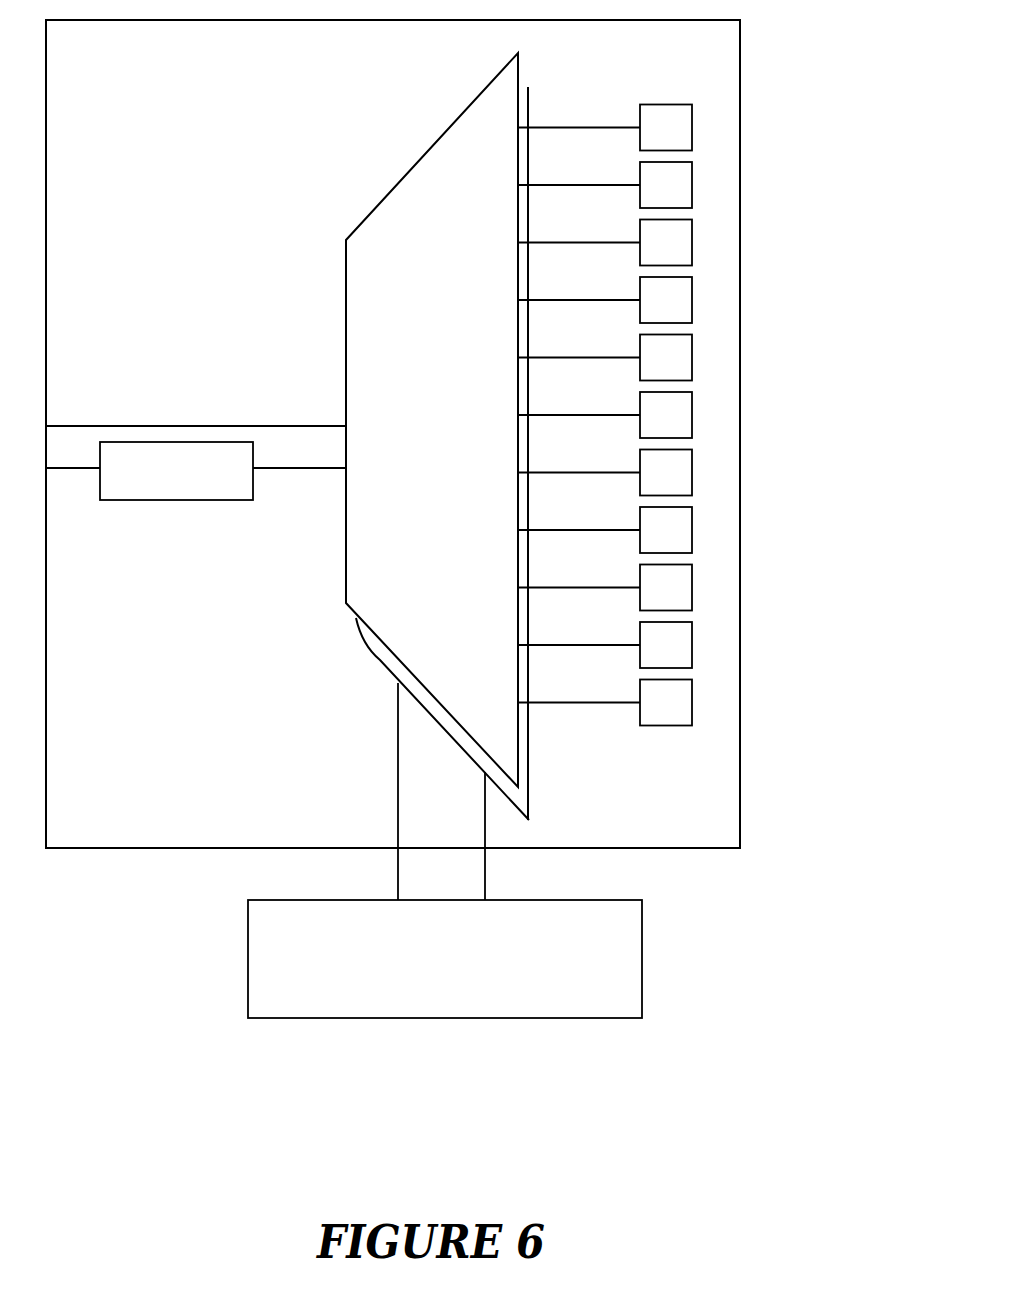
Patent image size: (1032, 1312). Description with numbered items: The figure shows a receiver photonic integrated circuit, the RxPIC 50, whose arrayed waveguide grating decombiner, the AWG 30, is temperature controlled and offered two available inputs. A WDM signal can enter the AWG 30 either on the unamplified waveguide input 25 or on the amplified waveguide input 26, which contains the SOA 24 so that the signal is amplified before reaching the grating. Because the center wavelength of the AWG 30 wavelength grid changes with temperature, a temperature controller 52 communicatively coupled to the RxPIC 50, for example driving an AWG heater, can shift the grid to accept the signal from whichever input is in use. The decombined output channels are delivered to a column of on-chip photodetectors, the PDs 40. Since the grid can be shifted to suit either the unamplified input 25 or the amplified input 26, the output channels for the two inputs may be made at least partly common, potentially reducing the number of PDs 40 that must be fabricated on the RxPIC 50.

The RxPIC 50 is at (393, 434).
The AWG 30 is at (437, 436).
The SOA 24 is at (176, 471).
The unamplified waveguide input 25 is at (96, 426).
The amplified waveguide input 26 is at (296, 468).
The PDs 40 is at (710, 101).
The temperature controller 52 is at (445, 850).